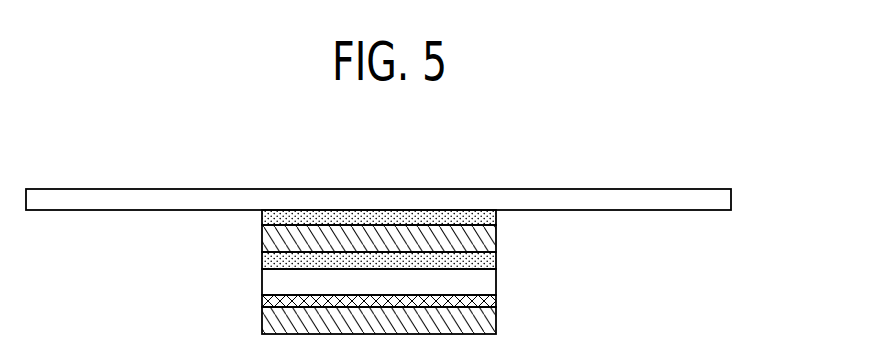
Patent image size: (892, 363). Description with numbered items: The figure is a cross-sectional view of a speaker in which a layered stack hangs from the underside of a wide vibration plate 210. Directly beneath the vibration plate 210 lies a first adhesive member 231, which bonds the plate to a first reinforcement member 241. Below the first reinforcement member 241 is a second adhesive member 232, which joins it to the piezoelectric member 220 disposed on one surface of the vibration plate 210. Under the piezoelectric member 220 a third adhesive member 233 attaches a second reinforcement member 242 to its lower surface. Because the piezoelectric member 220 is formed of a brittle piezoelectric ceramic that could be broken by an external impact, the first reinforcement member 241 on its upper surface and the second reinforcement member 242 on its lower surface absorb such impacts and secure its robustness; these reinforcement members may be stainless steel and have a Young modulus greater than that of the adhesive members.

The vibration plate 210 is at (637, 196).
The piezoelectric member 220 is at (277, 283).
The first adhesive member 231 is at (490, 217).
The second adhesive member 232 is at (490, 260).
The third adhesive member 233 is at (490, 296).
The first reinforcement member 241 is at (275, 238).
The second reinforcement member 242 is at (277, 320).